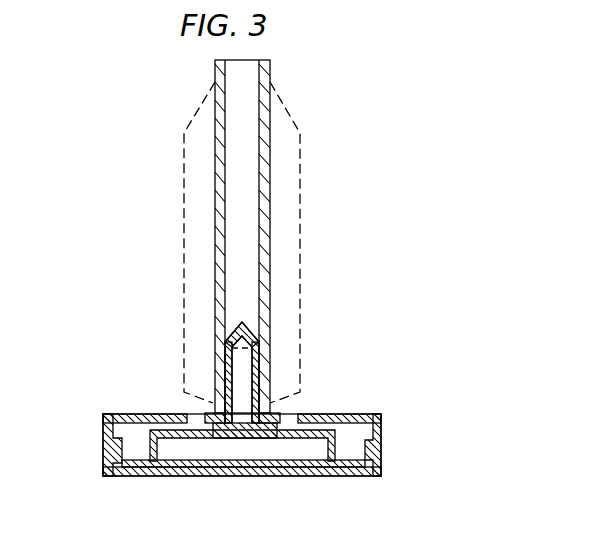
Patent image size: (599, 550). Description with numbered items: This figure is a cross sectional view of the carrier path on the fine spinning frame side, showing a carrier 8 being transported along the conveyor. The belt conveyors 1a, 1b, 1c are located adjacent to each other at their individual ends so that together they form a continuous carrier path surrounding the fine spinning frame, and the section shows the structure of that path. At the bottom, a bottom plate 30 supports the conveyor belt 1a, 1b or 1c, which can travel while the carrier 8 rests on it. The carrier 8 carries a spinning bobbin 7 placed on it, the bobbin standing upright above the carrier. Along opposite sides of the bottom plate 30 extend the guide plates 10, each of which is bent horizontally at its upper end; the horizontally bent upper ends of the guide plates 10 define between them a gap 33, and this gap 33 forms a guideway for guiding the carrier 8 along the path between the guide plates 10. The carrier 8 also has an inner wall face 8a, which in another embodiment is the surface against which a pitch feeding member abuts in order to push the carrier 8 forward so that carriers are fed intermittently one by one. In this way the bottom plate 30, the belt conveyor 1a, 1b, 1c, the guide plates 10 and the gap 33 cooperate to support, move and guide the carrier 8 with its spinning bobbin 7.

The spinning bobbin 7 is at (300, 203).
The carrier 8 is at (283, 414).
The inner wall face 8a is at (157, 446).
The gap 33 is at (194, 414).
The guide plates 10 is at (131, 414).
The bottom plate 30 is at (125, 475).
The belt conveyor 1a is at (348, 476).
The belt conveyor 1b is at (373, 445).
The belt conveyor 1c is at (242, 445).